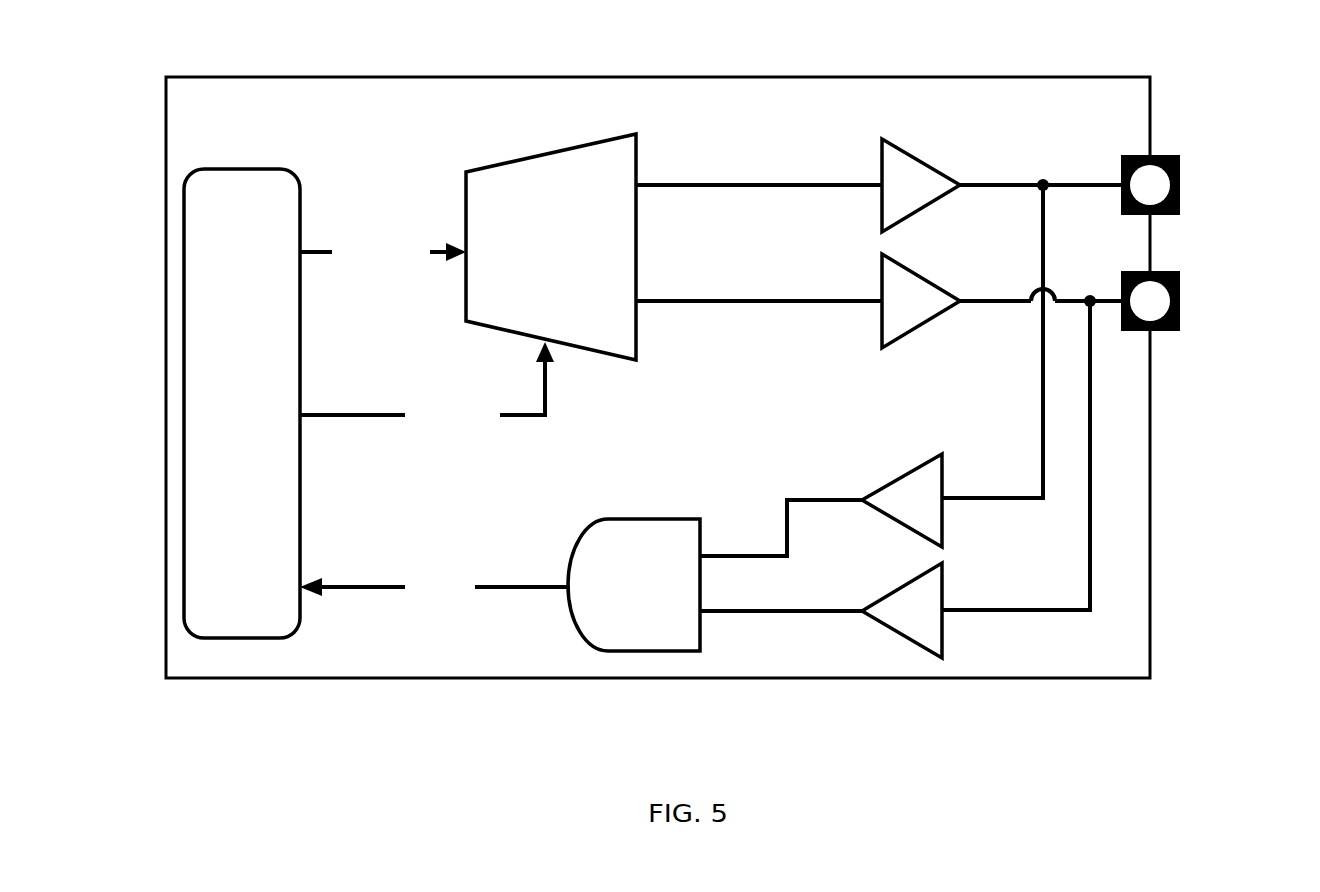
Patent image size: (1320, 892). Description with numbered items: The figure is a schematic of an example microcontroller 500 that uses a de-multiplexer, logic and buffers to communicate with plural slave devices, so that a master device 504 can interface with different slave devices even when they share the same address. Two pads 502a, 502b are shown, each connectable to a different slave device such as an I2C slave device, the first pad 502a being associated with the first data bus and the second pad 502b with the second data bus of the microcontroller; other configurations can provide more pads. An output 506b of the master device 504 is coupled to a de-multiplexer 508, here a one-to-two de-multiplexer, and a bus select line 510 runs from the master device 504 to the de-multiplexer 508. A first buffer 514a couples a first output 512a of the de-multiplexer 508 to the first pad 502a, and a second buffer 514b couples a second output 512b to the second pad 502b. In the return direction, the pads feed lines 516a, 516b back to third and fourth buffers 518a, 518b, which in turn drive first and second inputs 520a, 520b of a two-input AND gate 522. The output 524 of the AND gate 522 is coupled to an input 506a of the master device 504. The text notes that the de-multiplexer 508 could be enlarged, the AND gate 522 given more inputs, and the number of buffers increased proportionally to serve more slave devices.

The microcontroller 500 is at (485, 113).
The first pad 502a is at (1180, 210).
The second pad 502b is at (1180, 326).
The master device 504 is at (224, 474).
The input of the master device 506a is at (340, 585).
The output of the master device 506b is at (330, 254).
The de-multiplexer 508 is at (534, 290).
The bus select line 510 is at (365, 417).
The first output of the de-multiplexer 512a is at (726, 183).
The second output of the de-multiplexer 512b is at (726, 299).
The first buffer 514a is at (880, 209).
The second buffer 514b is at (880, 322).
The feedback line a 516a is at (1043, 378).
The feedback line b 516b is at (1090, 546).
The third buffer 518a is at (898, 476).
The fourth buffer 518b is at (901, 585).
The first input of the AND gate 520a is at (717, 548).
The second input of the AND gate 520b is at (722, 613).
The AND gate 522 is at (617, 625).
The output of the AND gate 524 is at (567, 585).